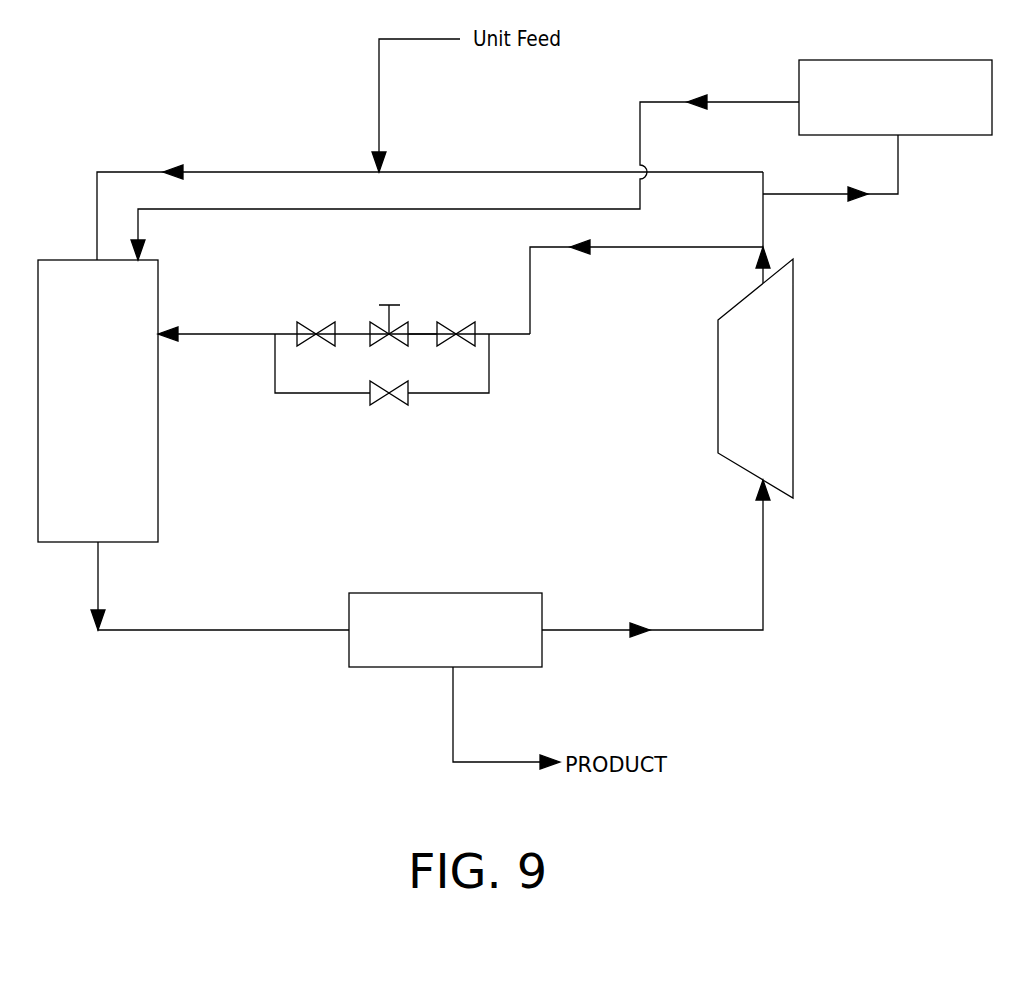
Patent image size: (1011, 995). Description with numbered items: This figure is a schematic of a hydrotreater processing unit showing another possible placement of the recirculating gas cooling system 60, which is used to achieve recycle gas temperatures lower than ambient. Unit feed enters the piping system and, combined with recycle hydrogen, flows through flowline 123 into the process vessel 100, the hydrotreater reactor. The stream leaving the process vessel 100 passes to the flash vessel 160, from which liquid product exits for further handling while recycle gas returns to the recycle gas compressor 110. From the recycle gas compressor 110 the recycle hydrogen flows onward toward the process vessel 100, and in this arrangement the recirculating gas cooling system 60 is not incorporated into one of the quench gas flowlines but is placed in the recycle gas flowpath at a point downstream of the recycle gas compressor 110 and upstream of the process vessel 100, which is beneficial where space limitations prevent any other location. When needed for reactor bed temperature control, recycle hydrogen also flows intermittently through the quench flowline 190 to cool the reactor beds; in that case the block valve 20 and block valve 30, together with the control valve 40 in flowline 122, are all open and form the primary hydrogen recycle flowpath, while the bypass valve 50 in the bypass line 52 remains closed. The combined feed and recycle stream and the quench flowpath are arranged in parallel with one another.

The process vessel 100 is at (120, 419).
The recirculating gas cooling system 60 is at (916, 112).
The flash vessel 160 is at (470, 641).
The recycle gas compressor 110 is at (778, 388).
The flowline 123 is at (260, 170).
The quench flowline 190 is at (653, 247).
The block valve 20 is at (322, 328).
The control valve 40 is at (388, 320).
The flowline 122 is at (422, 332).
The block valve 30 is at (460, 328).
The bypass line 52 is at (475, 395).
The bypass valve 50 is at (398, 404).